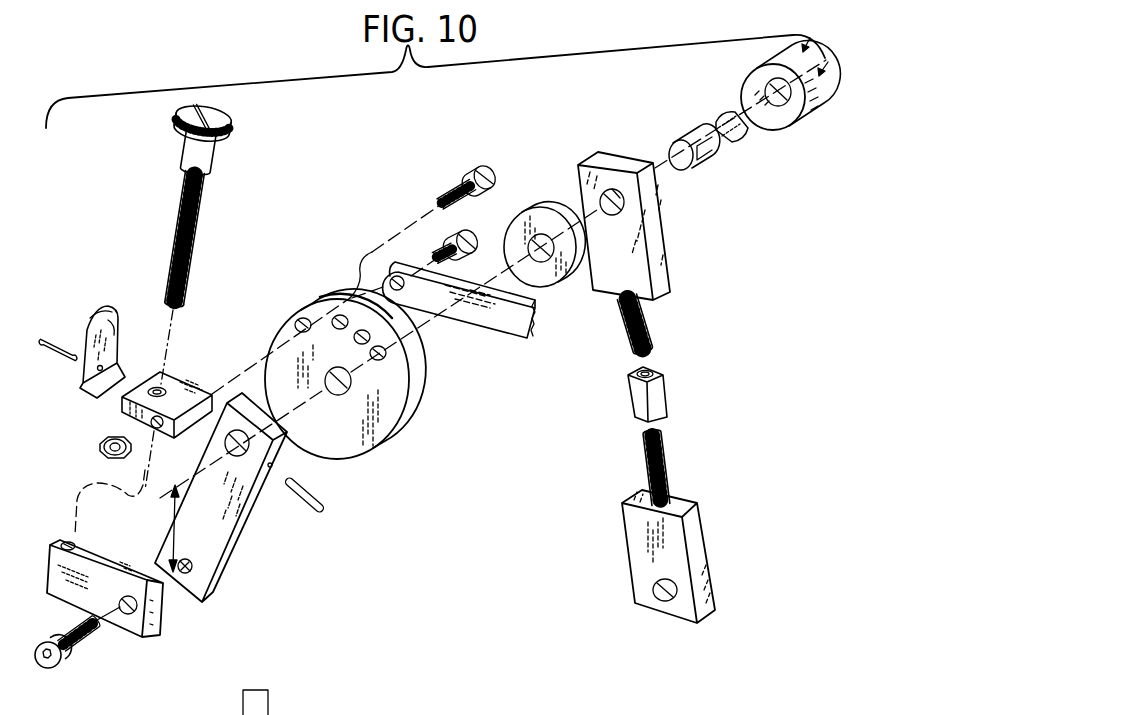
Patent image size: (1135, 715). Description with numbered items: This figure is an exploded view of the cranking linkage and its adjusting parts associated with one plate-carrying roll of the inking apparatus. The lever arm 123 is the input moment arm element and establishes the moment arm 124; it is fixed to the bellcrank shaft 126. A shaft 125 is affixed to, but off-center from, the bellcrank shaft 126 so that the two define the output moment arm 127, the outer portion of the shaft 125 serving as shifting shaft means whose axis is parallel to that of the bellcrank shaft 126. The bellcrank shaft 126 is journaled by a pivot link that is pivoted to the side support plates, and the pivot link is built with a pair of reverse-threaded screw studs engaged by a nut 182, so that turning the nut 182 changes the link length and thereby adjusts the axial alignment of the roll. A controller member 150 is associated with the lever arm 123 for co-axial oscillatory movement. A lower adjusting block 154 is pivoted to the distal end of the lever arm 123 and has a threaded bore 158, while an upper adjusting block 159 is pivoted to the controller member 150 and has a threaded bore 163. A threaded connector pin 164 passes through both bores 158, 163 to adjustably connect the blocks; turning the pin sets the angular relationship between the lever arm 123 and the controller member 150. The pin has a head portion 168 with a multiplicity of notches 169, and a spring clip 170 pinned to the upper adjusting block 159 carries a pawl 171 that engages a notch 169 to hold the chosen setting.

The lever arm 123 is at (247, 513).
The moment arm 124 is at (183, 528).
The shaft 125 is at (788, 99).
The bellcrank shaft 126 is at (734, 113).
The output moment arm 127 is at (787, 97).
The controller member 150 is at (340, 458).
The lower adjusting block 154 is at (125, 620).
The threaded bore 158 is at (70, 541).
The upper adjusting block 159 is at (172, 392).
The threaded bore 163 is at (157, 388).
The threaded connector pin 164 is at (195, 236).
The head portion 168 is at (222, 117).
The notches 169 is at (219, 138).
The spring clip 170 is at (90, 327).
The pawl 171 is at (111, 318).
The nut 182 is at (635, 408).